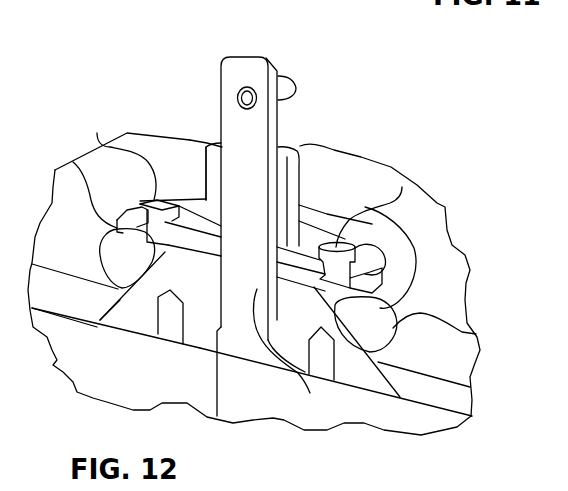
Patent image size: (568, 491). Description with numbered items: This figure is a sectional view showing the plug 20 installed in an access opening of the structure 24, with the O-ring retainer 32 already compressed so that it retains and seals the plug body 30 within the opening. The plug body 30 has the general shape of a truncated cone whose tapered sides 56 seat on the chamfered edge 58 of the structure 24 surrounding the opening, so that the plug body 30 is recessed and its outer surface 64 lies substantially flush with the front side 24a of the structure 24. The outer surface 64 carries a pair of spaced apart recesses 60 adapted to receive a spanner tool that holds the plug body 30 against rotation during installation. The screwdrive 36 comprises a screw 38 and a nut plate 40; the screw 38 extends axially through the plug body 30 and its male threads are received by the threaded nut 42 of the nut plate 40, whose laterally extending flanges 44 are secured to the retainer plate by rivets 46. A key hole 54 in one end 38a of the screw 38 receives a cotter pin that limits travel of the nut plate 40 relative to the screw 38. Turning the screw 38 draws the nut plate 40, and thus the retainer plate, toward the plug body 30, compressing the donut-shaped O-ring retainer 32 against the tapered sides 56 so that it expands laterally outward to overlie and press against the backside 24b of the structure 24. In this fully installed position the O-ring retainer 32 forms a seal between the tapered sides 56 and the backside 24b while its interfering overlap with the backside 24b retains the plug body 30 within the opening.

The plug 20 is at (204, 90).
The structure 24 is at (422, 247).
The front side 24a is at (72, 318).
The backside 24b is at (133, 110).
The plug body 30 is at (373, 380).
The O-ring retainer 32 is at (476, 335).
The screwdrive 36 is at (303, 190).
The screw 38 is at (287, 374).
The end of the screw 38a is at (246, 44).
The nut plate 40 is at (75, 163).
The threaded nut 42 is at (294, 173).
The laterally extending flanges 44 is at (444, 207).
The rivets 46 is at (97, 133).
The key hole 54 is at (261, 84).
The tapered sides 56 is at (375, 359).
The chamfered edge 58 is at (105, 318).
The recesses 60 is at (173, 317).
The outer surface 64 is at (148, 339).